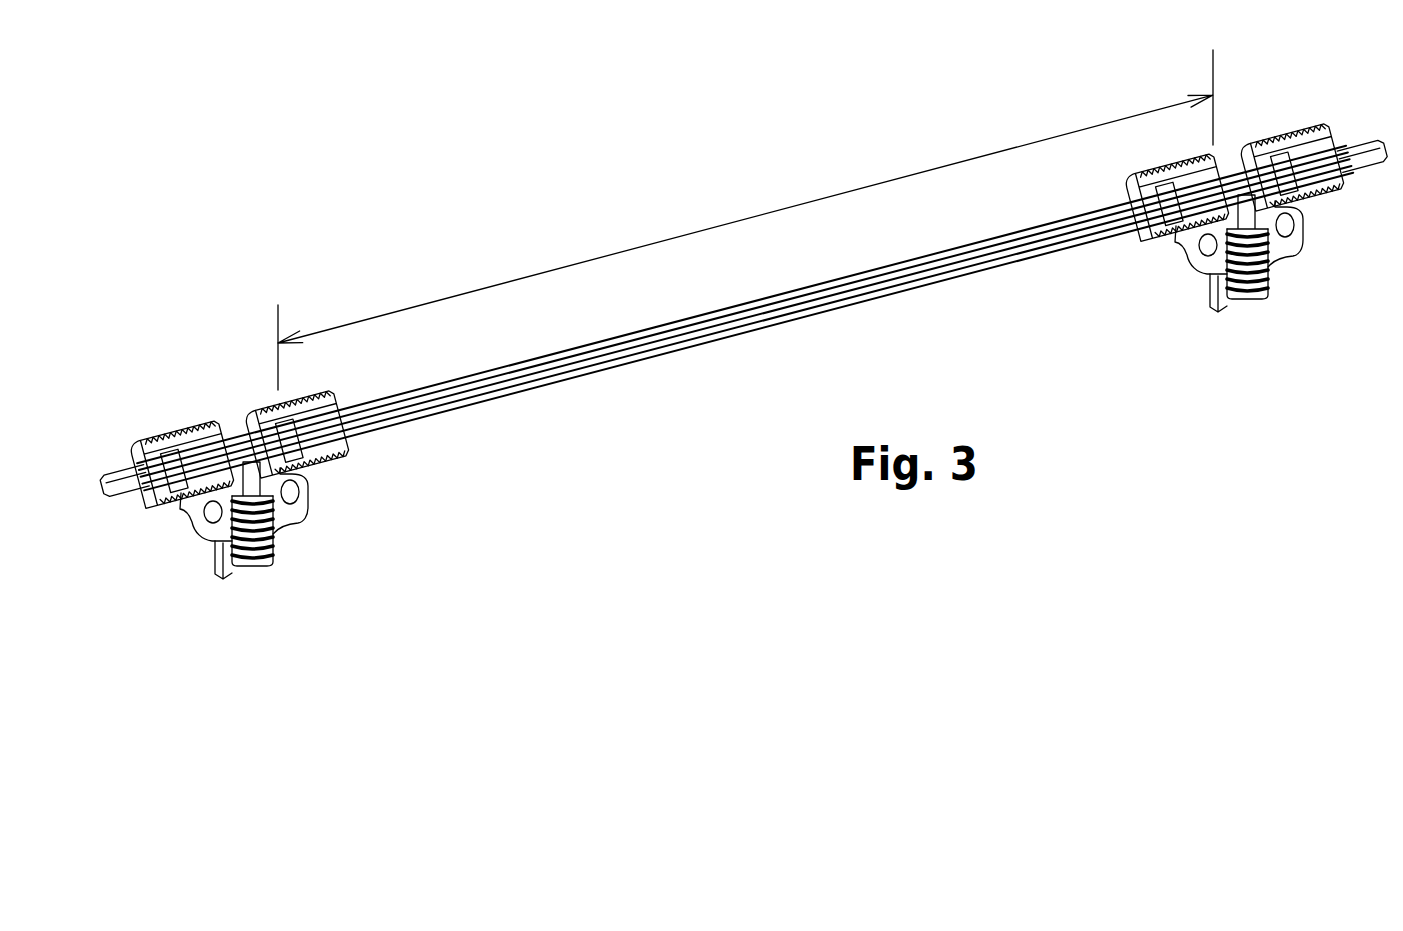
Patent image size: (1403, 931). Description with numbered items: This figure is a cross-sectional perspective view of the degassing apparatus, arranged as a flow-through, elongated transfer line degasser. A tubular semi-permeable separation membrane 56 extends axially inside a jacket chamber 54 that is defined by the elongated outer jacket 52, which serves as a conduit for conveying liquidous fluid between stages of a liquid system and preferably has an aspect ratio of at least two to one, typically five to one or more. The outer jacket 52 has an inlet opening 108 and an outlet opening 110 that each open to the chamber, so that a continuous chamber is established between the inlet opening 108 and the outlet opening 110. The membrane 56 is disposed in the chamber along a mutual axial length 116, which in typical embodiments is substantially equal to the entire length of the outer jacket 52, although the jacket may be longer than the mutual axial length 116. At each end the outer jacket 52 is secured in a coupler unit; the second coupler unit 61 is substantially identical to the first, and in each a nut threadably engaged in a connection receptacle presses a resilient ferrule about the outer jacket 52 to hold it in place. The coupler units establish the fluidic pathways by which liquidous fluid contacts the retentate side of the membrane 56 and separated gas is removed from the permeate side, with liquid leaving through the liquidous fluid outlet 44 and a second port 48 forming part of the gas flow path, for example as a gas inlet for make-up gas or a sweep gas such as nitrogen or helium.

The liquidous fluid outlet 44 is at (1277, 295).
The second port 48 is at (1384, 146).
The outer jacket 52 is at (524, 364).
The jacket chamber 54 is at (455, 405).
The tubular semi-permeable separation membrane 56 is at (665, 341).
The second coupler unit 61 is at (1258, 198).
The inlet opening 108 is at (236, 427).
The outlet opening 110 is at (1309, 212).
The mutual axial length 116 is at (651, 244).